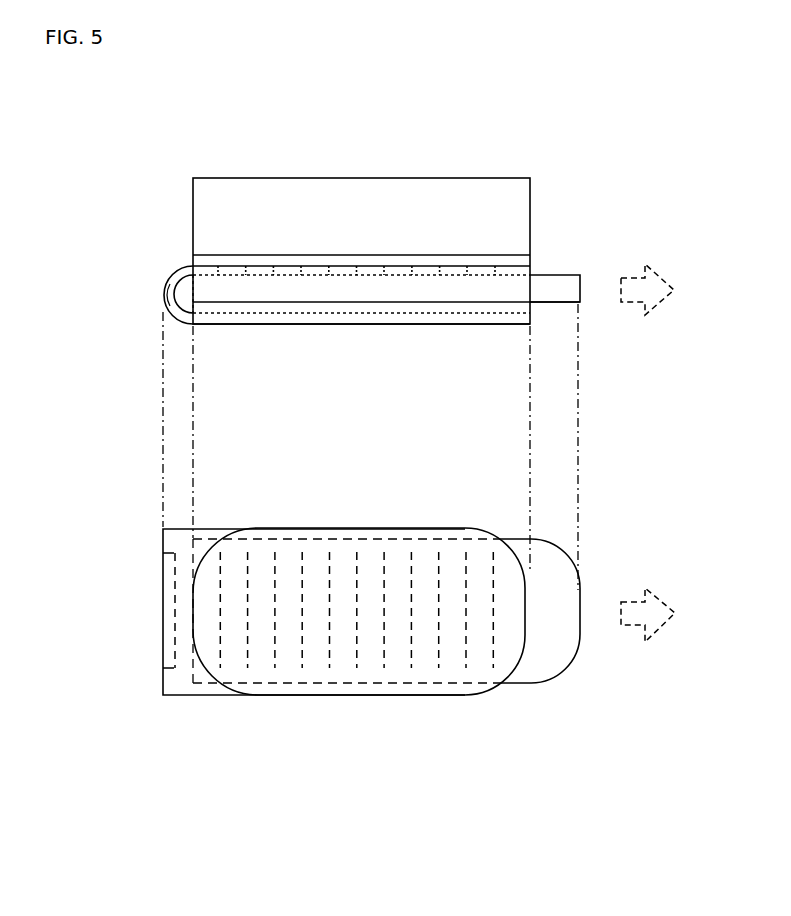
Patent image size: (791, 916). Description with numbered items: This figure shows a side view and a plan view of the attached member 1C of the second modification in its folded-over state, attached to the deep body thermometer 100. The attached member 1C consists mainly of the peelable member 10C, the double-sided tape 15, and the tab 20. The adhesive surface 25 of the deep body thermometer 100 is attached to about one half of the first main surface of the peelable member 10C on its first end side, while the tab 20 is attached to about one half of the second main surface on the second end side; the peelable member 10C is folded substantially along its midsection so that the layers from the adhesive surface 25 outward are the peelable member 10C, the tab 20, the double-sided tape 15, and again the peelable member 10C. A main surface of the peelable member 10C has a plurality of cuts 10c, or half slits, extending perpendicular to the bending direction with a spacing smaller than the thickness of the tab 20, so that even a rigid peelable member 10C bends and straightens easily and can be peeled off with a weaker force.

The deep body thermometer 100 is at (367, 190).
The peelable member 10C is at (330, 325).
The cuts 10c is at (222, 268).
The attached member 1C is at (152, 277).
The adhesive surface 25 is at (247, 268).
The double-sided tape 15 is at (417, 304).
The tab 20 is at (488, 296).